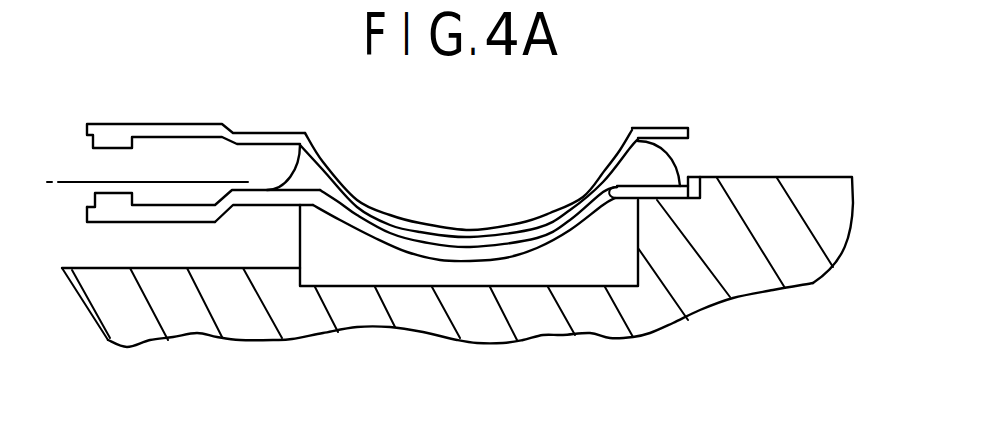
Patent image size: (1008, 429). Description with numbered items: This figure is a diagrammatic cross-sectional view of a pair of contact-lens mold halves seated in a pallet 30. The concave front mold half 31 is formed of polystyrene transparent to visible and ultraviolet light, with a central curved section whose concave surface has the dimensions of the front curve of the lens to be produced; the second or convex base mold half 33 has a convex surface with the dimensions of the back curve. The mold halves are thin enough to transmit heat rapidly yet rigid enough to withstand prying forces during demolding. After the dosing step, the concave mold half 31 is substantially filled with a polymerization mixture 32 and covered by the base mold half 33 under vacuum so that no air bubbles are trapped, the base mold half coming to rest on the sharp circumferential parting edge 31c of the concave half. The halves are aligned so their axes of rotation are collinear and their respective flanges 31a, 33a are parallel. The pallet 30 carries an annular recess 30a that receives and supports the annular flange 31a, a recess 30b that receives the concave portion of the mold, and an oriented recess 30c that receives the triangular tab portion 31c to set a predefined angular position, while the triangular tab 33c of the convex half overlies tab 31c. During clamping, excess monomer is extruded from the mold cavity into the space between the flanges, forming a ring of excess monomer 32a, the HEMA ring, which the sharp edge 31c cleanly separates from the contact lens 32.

The pallet 30 is at (787, 258).
The annular recess 30a is at (258, 206).
The recess 30b is at (382, 275).
The oriented recess 30c is at (160, 258).
The concave front mold half 31 is at (518, 255).
The annular flange 31a is at (677, 180).
The circumferential edge 31c is at (158, 217).
The polymerization mixture 32 is at (452, 245).
The ring of excess monomer 32a is at (306, 133).
The convex base mold half 33 is at (420, 224).
The flange 33a is at (670, 128).
The triangular tab 33c is at (177, 124).